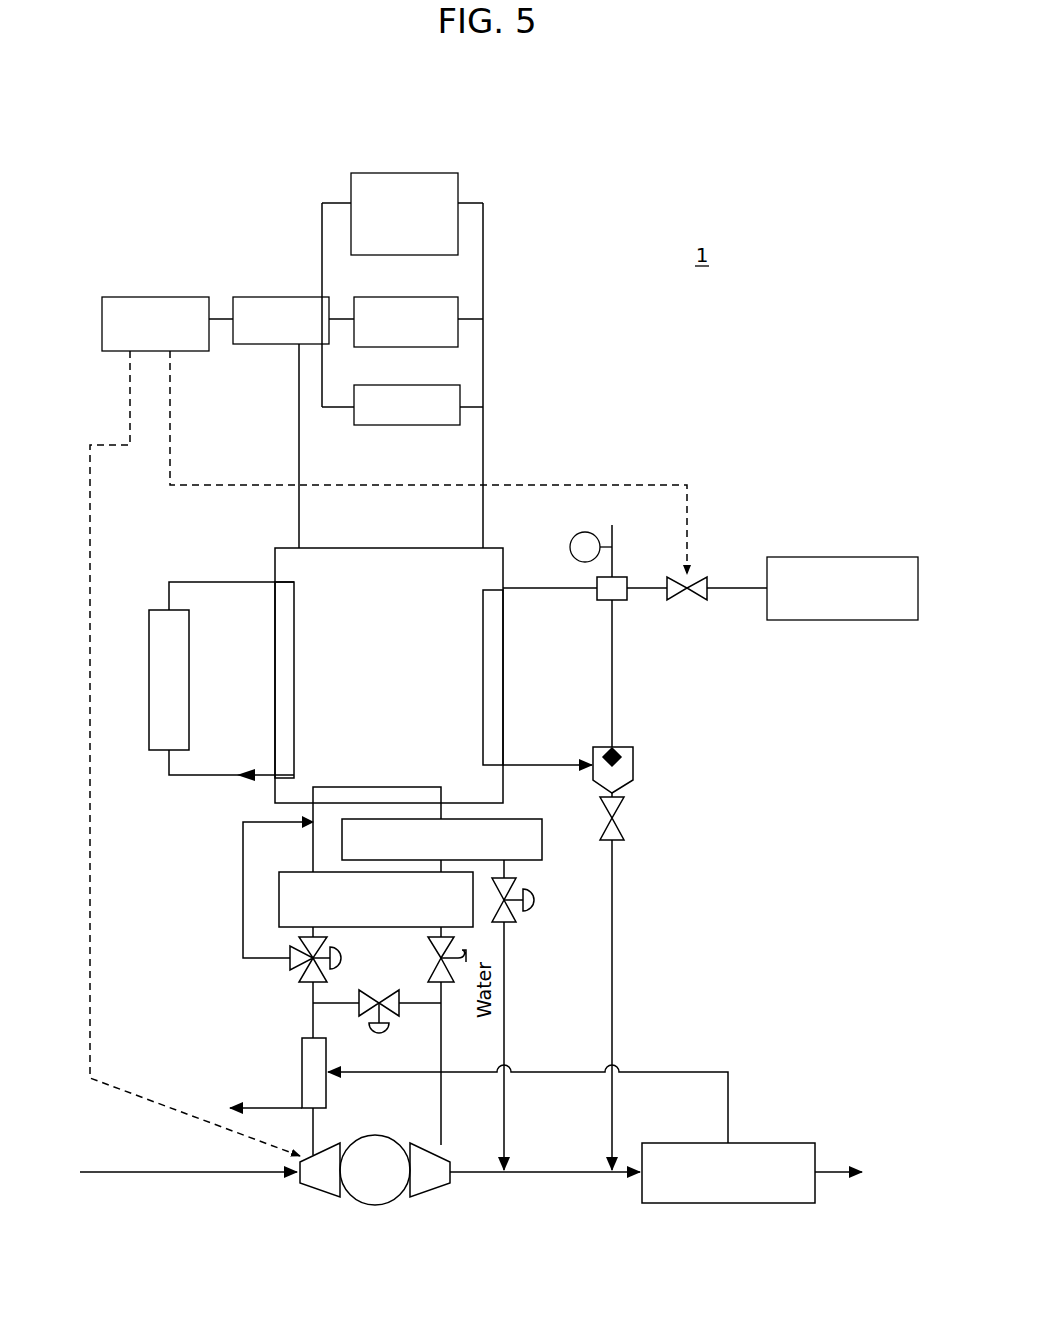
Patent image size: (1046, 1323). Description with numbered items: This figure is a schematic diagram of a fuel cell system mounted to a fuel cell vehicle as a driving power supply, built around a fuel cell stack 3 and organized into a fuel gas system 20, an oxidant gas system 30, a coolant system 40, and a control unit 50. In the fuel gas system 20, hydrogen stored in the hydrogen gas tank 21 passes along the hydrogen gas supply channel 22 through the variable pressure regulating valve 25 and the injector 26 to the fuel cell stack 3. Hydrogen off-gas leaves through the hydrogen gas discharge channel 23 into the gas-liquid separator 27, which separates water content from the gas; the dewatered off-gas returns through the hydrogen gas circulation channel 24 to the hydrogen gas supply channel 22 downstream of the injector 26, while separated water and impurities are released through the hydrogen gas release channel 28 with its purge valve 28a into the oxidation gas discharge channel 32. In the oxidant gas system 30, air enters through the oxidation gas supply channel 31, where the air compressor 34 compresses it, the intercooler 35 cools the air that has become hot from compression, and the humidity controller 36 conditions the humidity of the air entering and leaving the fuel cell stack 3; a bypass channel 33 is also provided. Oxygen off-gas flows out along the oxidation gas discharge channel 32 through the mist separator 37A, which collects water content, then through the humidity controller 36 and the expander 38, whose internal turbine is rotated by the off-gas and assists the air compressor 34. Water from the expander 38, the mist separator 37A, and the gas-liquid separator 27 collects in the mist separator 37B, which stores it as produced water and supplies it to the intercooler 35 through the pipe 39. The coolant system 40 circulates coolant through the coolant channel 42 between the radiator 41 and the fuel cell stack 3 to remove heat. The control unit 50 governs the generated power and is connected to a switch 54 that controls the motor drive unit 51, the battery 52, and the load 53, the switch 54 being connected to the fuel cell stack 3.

The fuel cell stack 3 is at (506, 545).
The fuel gas system 20 is at (710, 810).
The hydrogen gas tank 21 is at (840, 557).
The hydrogen gas supply channel 22 is at (528, 592).
The hydrogen gas discharge channel 23 is at (528, 762).
The hydrogen gas circulation channel 24 is at (612, 712).
The variable pressure regulating valve 25 is at (690, 600).
The injector 26 is at (617, 600).
The gas-liquid separator 27 is at (633, 762).
The purge valve 28a is at (618, 818).
The hydrogen gas release channel 28 is at (612, 918).
The oxidant gas system 30 is at (471, 1139).
The oxidation gas supply channel 31 is at (108, 1178).
The oxidation gas discharge channel 32 is at (441, 1045).
The bypass channel 33 is at (418, 1003).
The air compressor 34 is at (308, 1187).
The intercooler 35 is at (302, 1052).
The humidity controller 36 is at (279, 897).
The mist separator 37A is at (542, 840).
The mist separator 37B is at (765, 1143).
The expander 38 is at (435, 1190).
The pipe 39 is at (642, 1072).
The coolant system 40 is at (196, 689).
The radiator 41 is at (189, 735).
The coolant channel 42 is at (169, 597).
The control unit 50 is at (155, 297).
The motor drive unit 51 is at (458, 173).
The battery 52 is at (458, 297).
The load 53 is at (460, 385).
The switch 54 is at (268, 297).